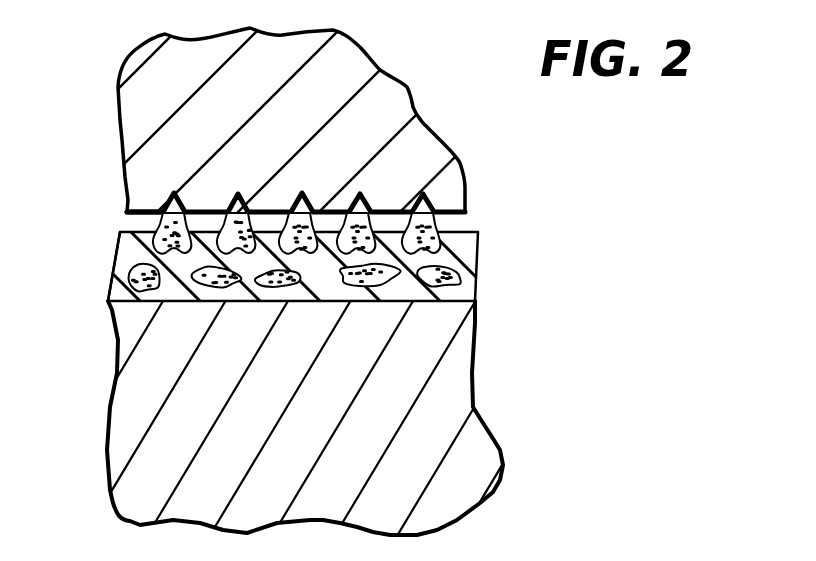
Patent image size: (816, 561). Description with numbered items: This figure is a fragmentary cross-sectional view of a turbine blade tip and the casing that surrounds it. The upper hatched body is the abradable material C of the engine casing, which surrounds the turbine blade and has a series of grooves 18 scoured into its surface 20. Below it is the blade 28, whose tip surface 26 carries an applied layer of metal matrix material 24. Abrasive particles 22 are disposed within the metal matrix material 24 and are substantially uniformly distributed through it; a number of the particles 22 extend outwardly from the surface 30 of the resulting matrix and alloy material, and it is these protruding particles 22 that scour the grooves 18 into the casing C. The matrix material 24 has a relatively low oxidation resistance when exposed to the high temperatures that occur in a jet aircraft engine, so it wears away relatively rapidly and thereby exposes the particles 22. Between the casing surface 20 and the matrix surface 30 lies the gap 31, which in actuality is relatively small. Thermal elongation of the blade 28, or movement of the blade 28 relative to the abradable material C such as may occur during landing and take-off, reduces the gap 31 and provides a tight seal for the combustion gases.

The abradable material C is at (388, 100).
The grooves 18 is at (246, 190).
The surface 20 is at (145, 205).
The abrasive particles 22 is at (157, 209).
The metal matrix material 24 is at (468, 249).
The tip surface 26 is at (458, 294).
The blade 28 is at (450, 415).
The surface 30 is at (121, 233).
The gap 31 is at (472, 219).